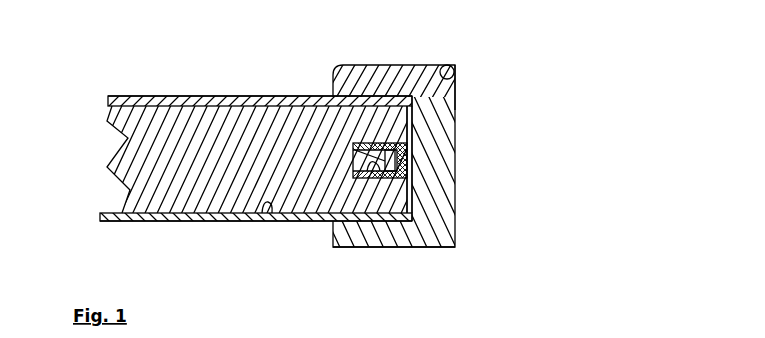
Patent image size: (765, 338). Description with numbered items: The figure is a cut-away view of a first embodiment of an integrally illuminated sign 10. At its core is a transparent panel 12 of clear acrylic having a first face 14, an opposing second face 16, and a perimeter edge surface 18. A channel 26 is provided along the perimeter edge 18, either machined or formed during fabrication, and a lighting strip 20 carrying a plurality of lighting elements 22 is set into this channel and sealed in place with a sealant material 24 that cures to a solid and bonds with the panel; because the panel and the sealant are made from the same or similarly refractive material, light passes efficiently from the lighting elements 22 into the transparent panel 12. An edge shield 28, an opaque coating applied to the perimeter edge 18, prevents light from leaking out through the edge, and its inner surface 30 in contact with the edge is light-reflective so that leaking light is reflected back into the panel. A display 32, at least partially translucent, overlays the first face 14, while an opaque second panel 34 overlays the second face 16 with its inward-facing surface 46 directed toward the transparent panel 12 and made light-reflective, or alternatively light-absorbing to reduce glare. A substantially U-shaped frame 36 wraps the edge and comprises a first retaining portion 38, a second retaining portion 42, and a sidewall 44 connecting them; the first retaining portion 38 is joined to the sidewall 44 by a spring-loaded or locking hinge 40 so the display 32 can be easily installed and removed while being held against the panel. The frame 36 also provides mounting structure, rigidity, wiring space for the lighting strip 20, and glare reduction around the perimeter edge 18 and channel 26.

The integrally illuminated sign 10 is at (148, 88).
The transparent panel 12 is at (172, 204).
The first face 14 is at (206, 100).
The second face 16 is at (226, 216).
The perimeter edge surface 18 is at (414, 203).
The lighting strip 20 is at (407, 160).
The lighting elements 22 is at (353, 148).
The sealant material 24 is at (398, 166).
The channel 26 is at (378, 178).
The edge shield 28 is at (418, 134).
The inner surface 30 is at (412, 124).
The display 32 is at (262, 100).
The second panel 34 is at (310, 216).
The frame 36 is at (458, 174).
The first retaining portion 38 is at (392, 74).
The hinge 40 is at (455, 71).
The second retaining portion 42 is at (417, 240).
The sidewall 44 is at (450, 205).
The inward-facing surface 46 is at (270, 213).